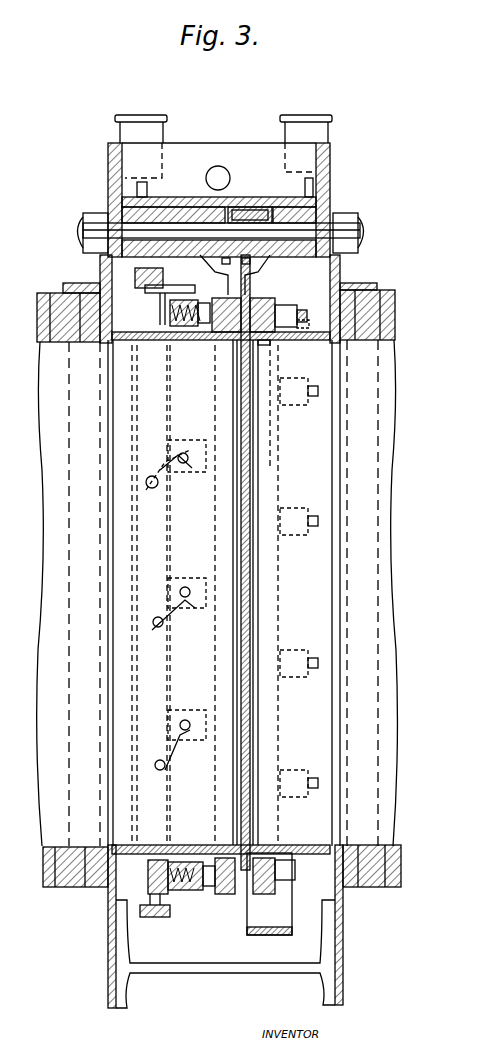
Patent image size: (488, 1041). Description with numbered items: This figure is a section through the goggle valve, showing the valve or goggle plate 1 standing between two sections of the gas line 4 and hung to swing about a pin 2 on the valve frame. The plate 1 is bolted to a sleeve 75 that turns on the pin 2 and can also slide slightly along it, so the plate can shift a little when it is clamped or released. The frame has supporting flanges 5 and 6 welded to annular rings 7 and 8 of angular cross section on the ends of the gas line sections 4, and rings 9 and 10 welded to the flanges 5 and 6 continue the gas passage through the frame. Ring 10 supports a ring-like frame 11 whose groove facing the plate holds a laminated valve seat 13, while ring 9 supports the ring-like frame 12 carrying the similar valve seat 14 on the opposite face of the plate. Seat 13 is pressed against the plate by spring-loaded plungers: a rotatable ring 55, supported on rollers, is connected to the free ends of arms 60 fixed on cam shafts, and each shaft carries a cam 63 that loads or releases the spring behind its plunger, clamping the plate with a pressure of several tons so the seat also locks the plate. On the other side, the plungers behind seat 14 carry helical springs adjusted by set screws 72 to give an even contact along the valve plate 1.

The valve or goggle plate 1 is at (247, 896).
The pin 2 is at (172, 225).
The gas line sections 4 is at (37, 317).
The supporting flange 5 is at (330, 272).
The supporting flange 6 is at (113, 299).
The annular ring 7 is at (350, 288).
The annular ring 8 is at (78, 290).
The ring 9 is at (305, 340).
The ring 10 is at (152, 340).
The ring-like frame 11 is at (218, 342).
The ring-like frame 12 is at (270, 345).
The valve seat 13 is at (228, 345).
The valve seat 14 is at (272, 308).
The rotatable ring 55 is at (130, 232).
The arms 60 is at (165, 292).
The cam 63 is at (170, 311).
The set screw 72 is at (318, 532).
The sleeve 75 is at (240, 210).